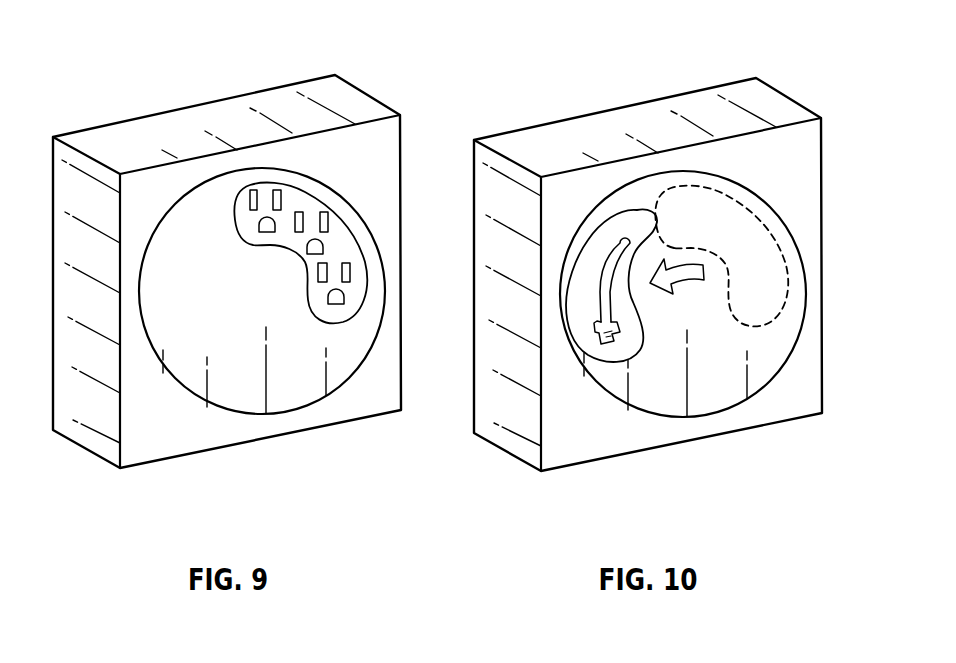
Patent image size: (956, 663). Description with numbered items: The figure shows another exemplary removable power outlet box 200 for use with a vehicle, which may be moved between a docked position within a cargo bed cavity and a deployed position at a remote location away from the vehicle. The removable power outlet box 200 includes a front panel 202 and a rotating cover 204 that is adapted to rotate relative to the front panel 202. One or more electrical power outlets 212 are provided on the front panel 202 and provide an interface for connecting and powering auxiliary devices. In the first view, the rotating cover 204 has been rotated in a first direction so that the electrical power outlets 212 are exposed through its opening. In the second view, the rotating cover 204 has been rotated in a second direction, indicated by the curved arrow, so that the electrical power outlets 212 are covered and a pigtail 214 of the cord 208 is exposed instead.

In FIG. 9, the removable power outlet box 200 is at (320, 42).
In FIG. 10, the removable power outlet box 200 is at (720, 42).
In FIG. 9, the front panel 202 is at (340, 235).
In FIG. 10, the front panel 202 is at (633, 225).
In FIG. 9, the rotating cover 204 is at (225, 397).
In FIG. 10, the rotating cover 204 is at (703, 392).
In FIG. 10, the cord 208 is at (600, 303).
In FIG. 9, the electrical power outlets 212 is at (330, 298).
In FIG. 10, the pigtail 214 is at (612, 343).